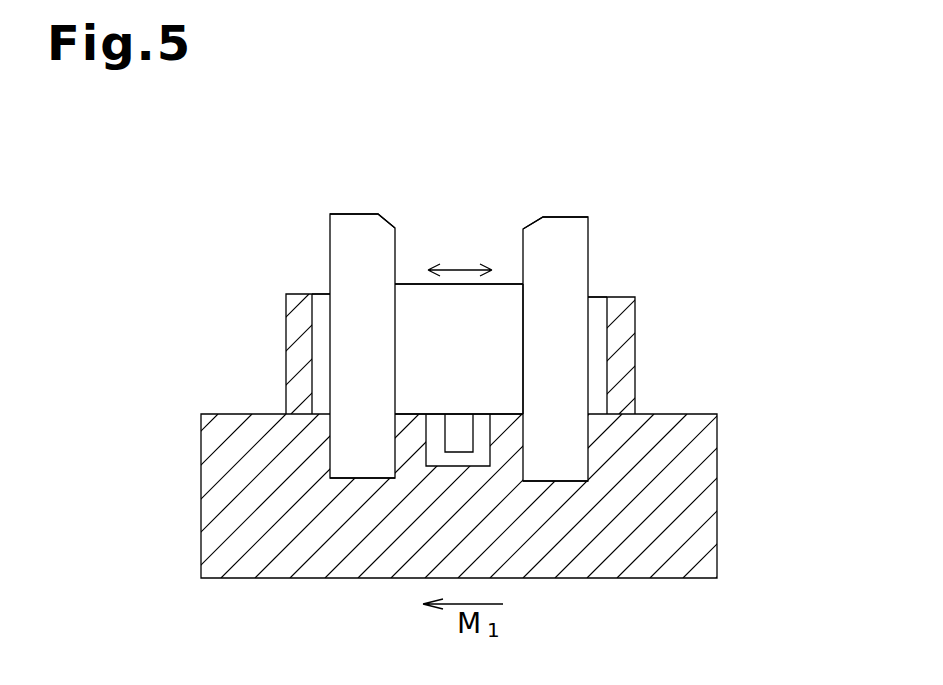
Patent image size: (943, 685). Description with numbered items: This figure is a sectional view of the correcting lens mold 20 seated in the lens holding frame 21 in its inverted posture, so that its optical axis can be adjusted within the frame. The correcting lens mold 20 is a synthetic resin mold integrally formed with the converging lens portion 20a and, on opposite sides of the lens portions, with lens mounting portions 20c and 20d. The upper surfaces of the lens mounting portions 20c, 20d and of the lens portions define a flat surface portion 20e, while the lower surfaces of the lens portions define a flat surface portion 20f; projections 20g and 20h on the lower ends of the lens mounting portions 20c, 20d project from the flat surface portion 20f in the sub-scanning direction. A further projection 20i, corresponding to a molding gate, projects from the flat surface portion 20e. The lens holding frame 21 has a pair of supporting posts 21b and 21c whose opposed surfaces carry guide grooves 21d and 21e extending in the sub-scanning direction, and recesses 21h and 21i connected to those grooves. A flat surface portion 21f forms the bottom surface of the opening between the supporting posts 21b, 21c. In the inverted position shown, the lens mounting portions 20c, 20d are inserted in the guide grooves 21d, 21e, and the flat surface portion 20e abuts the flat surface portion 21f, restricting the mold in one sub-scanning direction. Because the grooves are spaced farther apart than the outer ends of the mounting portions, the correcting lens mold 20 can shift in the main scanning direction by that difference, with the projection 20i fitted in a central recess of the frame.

The correcting lens mold 20 is at (487, 220).
The converging lens portion 20a is at (415, 297).
The lens mounting portion 20c is at (352, 355).
The lens mounting portion 20d is at (550, 387).
The flat surface portion 20e is at (352, 414).
The flat surface portion 20f is at (503, 283).
The projection 20g is at (353, 214).
The projection 20h is at (562, 217).
The projection 20i is at (455, 453).
The lens holding frame 21 is at (717, 528).
The supporting post 21b is at (323, 303).
The supporting post 21c is at (595, 315).
The guide groove 21d is at (314, 340).
The guide groove 21e is at (605, 343).
The flat surface portion 21f is at (406, 413).
The recess 21h is at (383, 458).
The recess 21i is at (523, 455).